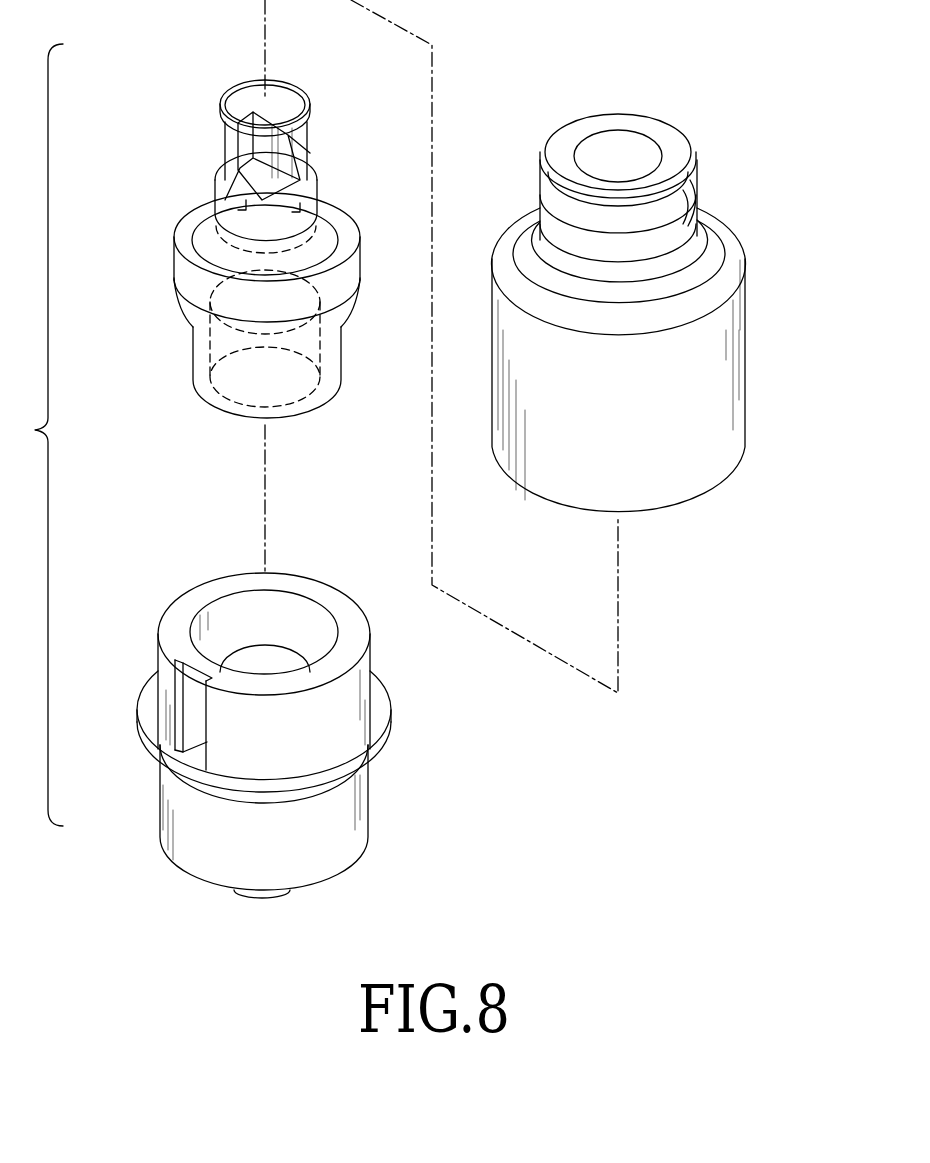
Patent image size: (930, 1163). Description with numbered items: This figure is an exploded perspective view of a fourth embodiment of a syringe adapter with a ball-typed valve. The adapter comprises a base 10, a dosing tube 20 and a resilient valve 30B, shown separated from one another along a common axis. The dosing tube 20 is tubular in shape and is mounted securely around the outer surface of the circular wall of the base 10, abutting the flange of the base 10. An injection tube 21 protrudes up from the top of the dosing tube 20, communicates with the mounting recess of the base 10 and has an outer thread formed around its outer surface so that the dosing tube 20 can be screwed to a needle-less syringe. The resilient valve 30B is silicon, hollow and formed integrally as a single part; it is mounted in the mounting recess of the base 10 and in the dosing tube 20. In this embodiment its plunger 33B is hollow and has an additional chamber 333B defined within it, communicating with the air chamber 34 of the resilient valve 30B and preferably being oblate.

The resilient valve 30B is at (177, 144).
The plunger 33B is at (278, 90).
The cam slot 333B is at (292, 152).
The air chamber 34 is at (197, 285).
The injection tube 21 is at (657, 133).
The dosing tube 20 is at (698, 485).
The base 10 is at (348, 818).